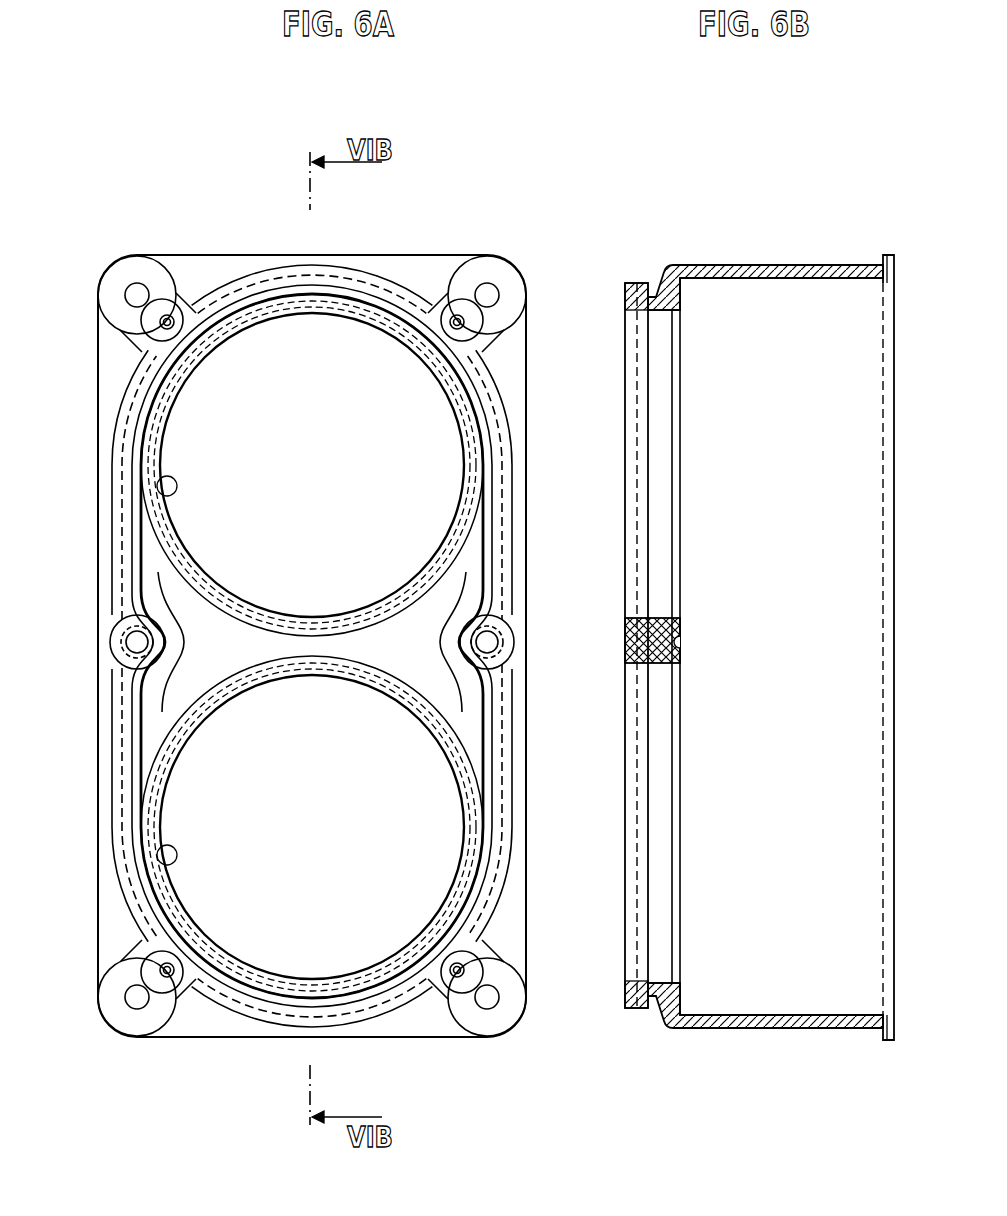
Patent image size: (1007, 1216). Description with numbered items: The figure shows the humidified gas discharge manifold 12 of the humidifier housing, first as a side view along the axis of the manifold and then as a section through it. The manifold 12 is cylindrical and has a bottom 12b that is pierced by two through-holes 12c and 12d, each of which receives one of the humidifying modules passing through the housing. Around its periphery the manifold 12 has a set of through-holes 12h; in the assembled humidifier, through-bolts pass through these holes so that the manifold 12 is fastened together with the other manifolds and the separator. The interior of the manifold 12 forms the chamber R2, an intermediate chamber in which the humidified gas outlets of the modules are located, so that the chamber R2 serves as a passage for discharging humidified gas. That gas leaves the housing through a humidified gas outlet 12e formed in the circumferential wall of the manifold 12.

In FIG. 6A, the manifold 12 is at (233, 250).
In FIG. 6B, the manifold 12 is at (790, 266).
In FIG. 6A, the through-holes 12h is at (160, 318).
In FIG. 6A, the through-hole 12c is at (170, 490).
In FIG. 6B, the through-hole 12c is at (638, 328).
In FIG. 6A, the through-hole 12d is at (170, 857).
In FIG. 6B, the through-hole 12d is at (627, 970).
In FIG. 6B, the humidified gas outlet 12e is at (738, 262).
In FIG. 6B, the bottom 12b is at (640, 666).
In FIG. 6B, the chamber R2 is at (784, 512).